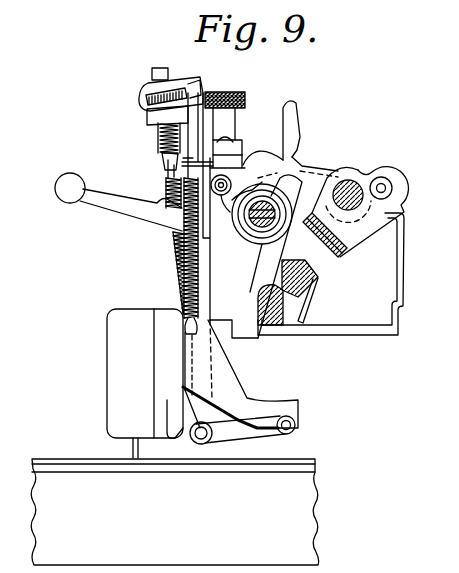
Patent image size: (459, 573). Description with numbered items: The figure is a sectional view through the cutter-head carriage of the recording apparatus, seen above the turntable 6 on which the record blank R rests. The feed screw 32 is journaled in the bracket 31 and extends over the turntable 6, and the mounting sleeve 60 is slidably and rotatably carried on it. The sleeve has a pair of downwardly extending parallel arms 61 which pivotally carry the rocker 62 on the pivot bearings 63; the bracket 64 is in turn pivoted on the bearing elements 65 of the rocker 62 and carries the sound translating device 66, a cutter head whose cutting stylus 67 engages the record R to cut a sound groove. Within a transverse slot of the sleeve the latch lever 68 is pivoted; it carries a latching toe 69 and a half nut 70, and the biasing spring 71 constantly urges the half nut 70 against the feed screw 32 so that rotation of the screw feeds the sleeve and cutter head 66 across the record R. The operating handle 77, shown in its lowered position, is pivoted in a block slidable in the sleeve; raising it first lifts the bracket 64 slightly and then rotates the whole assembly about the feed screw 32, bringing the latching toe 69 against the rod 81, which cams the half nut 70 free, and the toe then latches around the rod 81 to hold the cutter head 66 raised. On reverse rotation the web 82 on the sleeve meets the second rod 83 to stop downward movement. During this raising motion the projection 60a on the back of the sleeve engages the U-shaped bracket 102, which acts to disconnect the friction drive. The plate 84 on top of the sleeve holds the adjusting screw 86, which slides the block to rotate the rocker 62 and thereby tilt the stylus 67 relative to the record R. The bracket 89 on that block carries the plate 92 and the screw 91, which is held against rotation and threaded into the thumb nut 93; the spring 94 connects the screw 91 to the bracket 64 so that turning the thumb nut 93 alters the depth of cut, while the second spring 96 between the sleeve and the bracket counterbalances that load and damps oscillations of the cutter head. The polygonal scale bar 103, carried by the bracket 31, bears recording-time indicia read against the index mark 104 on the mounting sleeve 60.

The turntable 6 is at (300, 528).
The record blank R is at (44, 458).
The bracket 31 is at (402, 300).
The feed screw 32 is at (262, 226).
The mounting sleeve 60 is at (254, 248).
The projection 60a is at (297, 158).
The parallel arms 61 is at (240, 349).
The rocker 62 is at (236, 443).
The pivot bearings 63 is at (197, 443).
The bracket 64 is at (275, 401).
The bearing elements 65 is at (295, 429).
The sound translating device 66 is at (122, 331).
The cutting stylus 67 is at (130, 443).
The latch lever 68 is at (297, 104).
The latching toe 69 is at (327, 174).
The half nut 70 is at (260, 192).
The biasing spring 71 is at (245, 163).
The operating handle 77 is at (100, 210).
The rod 81 is at (353, 190).
The web 82 is at (262, 321).
The second rod 83 is at (308, 311).
The plate 84 is at (210, 142).
The adjusting screw 86 is at (228, 119).
The bracket 89 is at (201, 92).
The screw 91 is at (162, 68).
The plate 92 is at (148, 81).
The thumb nut 93 is at (143, 97).
The spring 94 is at (165, 184).
The second spring 96 is at (177, 278).
The U-shaped bracket 102 is at (378, 237).
The scale bar 103 is at (313, 267).
The index mark 104 is at (318, 289).